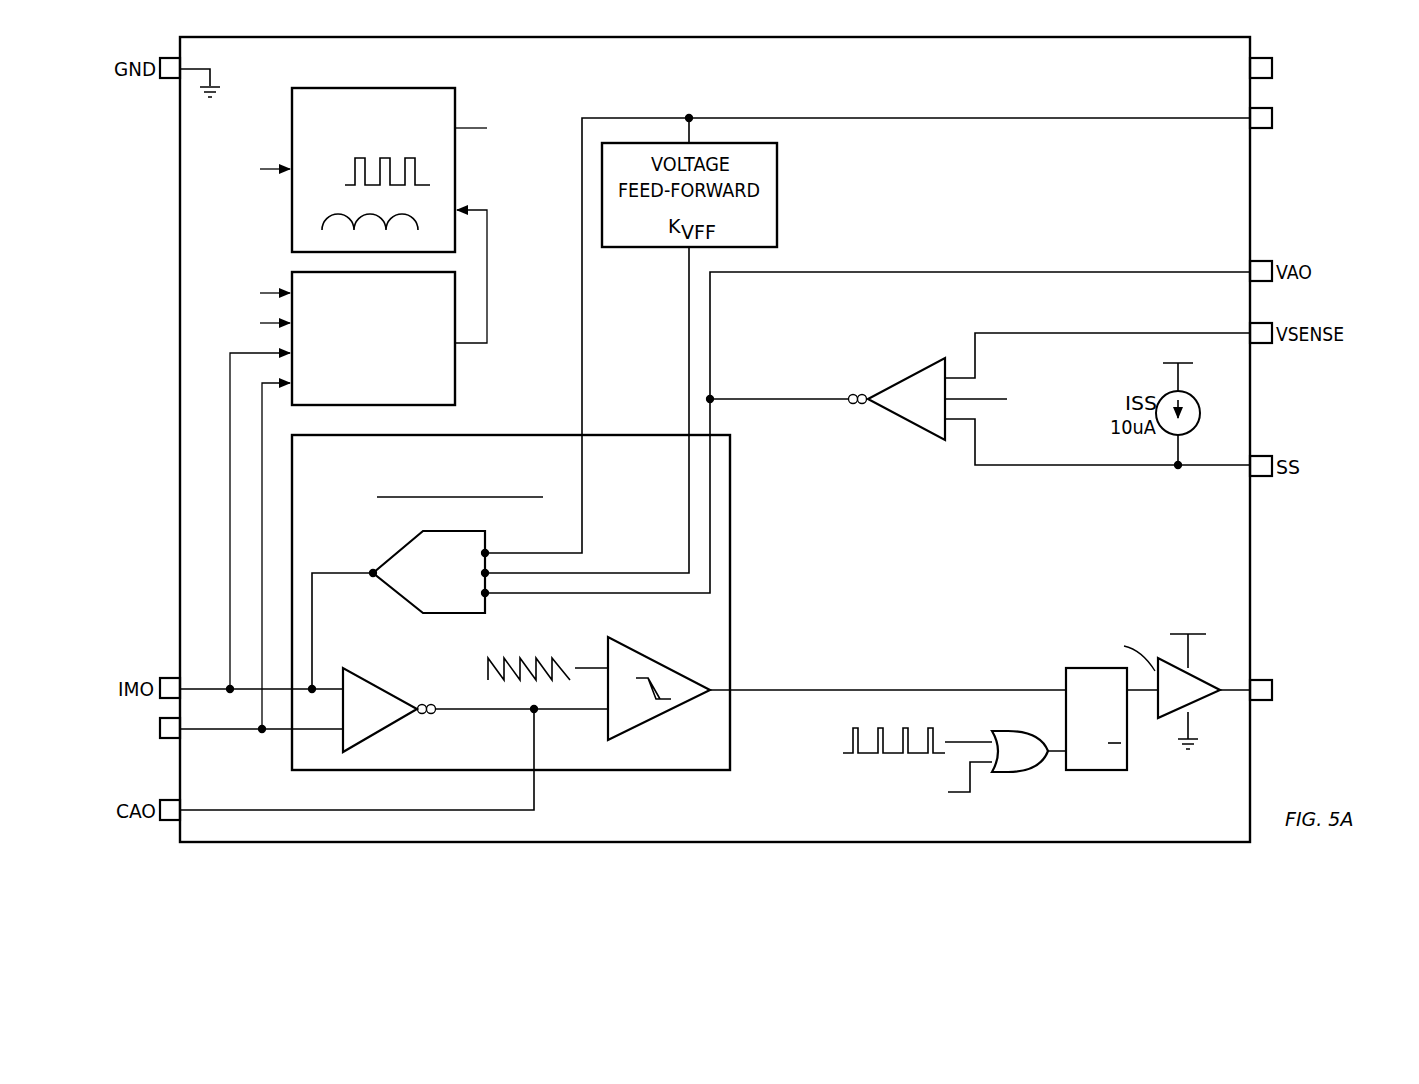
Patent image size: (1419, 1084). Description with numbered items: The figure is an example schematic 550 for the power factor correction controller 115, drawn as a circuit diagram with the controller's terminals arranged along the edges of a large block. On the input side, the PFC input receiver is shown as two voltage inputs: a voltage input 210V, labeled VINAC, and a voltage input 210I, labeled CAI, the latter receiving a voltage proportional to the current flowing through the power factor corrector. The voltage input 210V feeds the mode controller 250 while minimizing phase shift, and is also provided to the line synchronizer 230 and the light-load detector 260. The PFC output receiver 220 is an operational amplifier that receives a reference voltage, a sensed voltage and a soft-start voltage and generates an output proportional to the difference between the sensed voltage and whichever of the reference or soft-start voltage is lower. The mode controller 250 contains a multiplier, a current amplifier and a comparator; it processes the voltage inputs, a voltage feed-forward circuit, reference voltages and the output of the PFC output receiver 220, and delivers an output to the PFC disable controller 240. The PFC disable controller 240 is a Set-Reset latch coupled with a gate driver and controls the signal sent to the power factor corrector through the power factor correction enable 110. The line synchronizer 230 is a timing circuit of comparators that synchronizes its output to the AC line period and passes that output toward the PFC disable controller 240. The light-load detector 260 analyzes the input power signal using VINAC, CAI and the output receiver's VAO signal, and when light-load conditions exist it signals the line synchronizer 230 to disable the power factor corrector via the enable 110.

The example schematic 550 is at (1348, 80).
The power factor correction controller 115 is at (1258, 554).
The power factor correction enable 110 is at (1262, 702).
The voltage input 210V is at (1262, 130).
The voltage input 210I is at (168, 742).
The PFC output receiver 220 is at (906, 374).
The line synchronizer 230 is at (292, 136).
The PFC disable controller 240 is at (1032, 634).
The mode controller 250 is at (737, 524).
The light-load detector 260 is at (455, 370).